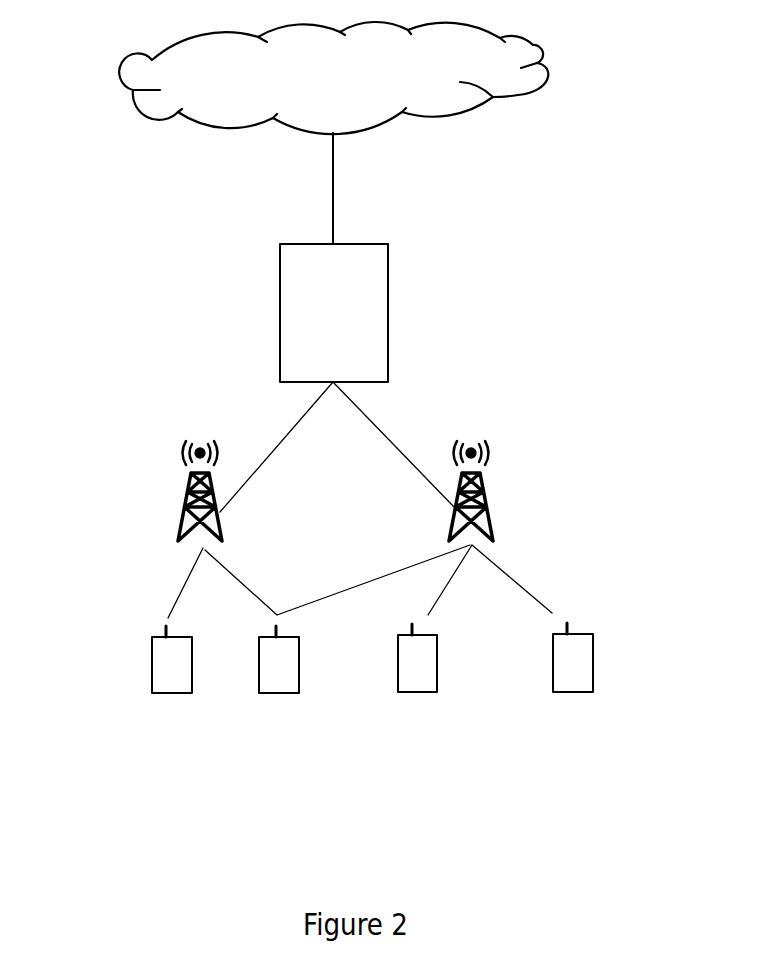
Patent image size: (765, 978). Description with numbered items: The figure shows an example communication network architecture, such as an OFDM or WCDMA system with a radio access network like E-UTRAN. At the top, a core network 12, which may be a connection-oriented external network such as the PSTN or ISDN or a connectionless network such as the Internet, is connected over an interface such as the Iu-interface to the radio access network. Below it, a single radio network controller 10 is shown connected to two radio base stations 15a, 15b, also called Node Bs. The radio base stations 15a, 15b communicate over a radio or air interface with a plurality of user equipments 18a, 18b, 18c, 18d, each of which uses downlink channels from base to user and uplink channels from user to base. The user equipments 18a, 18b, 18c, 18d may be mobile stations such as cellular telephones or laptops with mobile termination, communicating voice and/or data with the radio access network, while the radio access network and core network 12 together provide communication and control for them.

The core network 12 is at (533, 45).
The radio network controller 10 is at (388, 303).
The radio base station 15a is at (187, 505).
The radio base station 15b is at (488, 505).
The user equipment 18a is at (153, 657).
The user equipment 18b is at (278, 693).
The user equipment 18c is at (415, 692).
The user equipment 18d is at (592, 650).